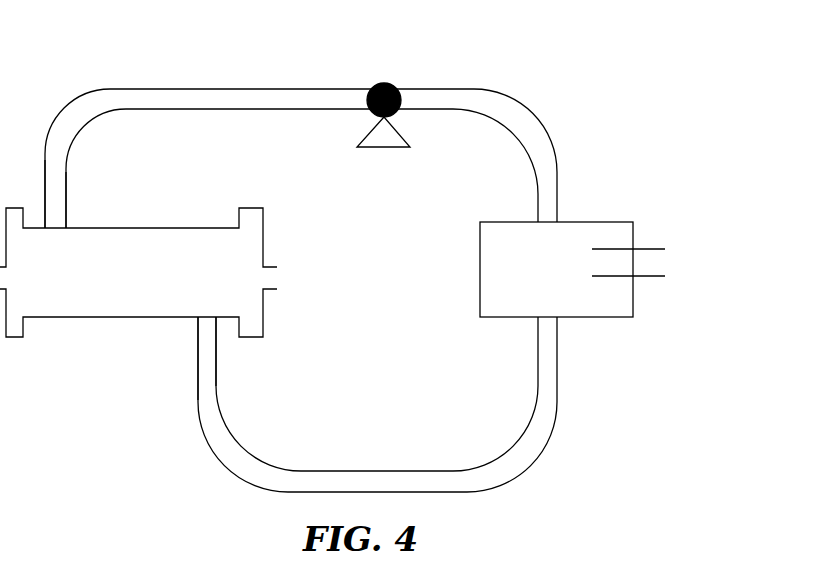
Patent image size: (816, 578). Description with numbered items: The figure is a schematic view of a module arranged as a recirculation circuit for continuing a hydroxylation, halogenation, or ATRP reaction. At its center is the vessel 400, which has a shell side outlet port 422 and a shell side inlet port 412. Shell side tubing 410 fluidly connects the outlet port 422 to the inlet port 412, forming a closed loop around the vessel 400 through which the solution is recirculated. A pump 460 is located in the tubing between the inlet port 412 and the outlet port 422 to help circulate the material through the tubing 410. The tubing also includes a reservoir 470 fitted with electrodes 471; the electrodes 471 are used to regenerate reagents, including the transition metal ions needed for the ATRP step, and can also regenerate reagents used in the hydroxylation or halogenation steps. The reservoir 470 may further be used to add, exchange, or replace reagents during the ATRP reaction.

The vessel 400 is at (90, 285).
The shell side tubing 410 is at (205, 97).
The shell side inlet port 412 is at (183, 335).
The shell side outlet port 422 is at (76, 217).
The pump 460 is at (387, 83).
The reservoir 470 is at (590, 303).
The electrodes 471 is at (673, 247).